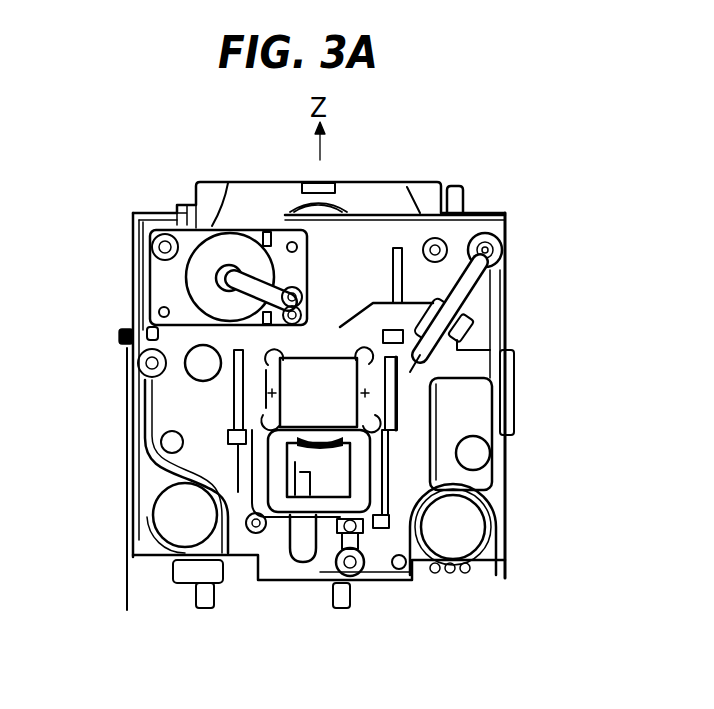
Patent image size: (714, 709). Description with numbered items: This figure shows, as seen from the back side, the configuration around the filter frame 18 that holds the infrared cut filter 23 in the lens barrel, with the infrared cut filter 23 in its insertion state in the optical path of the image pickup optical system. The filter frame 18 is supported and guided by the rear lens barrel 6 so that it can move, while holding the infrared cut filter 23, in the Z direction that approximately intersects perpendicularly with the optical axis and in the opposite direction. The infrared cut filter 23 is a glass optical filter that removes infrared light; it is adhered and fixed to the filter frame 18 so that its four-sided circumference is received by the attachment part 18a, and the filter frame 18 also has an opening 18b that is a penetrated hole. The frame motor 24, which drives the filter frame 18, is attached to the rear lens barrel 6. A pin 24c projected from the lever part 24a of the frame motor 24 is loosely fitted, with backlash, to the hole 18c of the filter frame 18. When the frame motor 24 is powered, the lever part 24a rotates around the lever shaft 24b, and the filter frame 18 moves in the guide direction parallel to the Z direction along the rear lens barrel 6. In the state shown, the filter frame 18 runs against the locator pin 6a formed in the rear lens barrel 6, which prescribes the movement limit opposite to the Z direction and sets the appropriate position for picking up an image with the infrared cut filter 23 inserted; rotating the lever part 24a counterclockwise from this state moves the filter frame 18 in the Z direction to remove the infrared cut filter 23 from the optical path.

The rear lens barrel 6 is at (510, 306).
The locator pin 6a is at (360, 525).
The filter frame 18 is at (337, 320).
The attachment part 18a is at (285, 400).
The opening 18b is at (340, 463).
The hole 18c is at (290, 296).
The infrared cut filter 23 is at (343, 380).
The frame motor 24 is at (190, 318).
The lever part 24a is at (265, 300).
The lever shaft 24b is at (217, 270).
The pin 24c is at (290, 317).